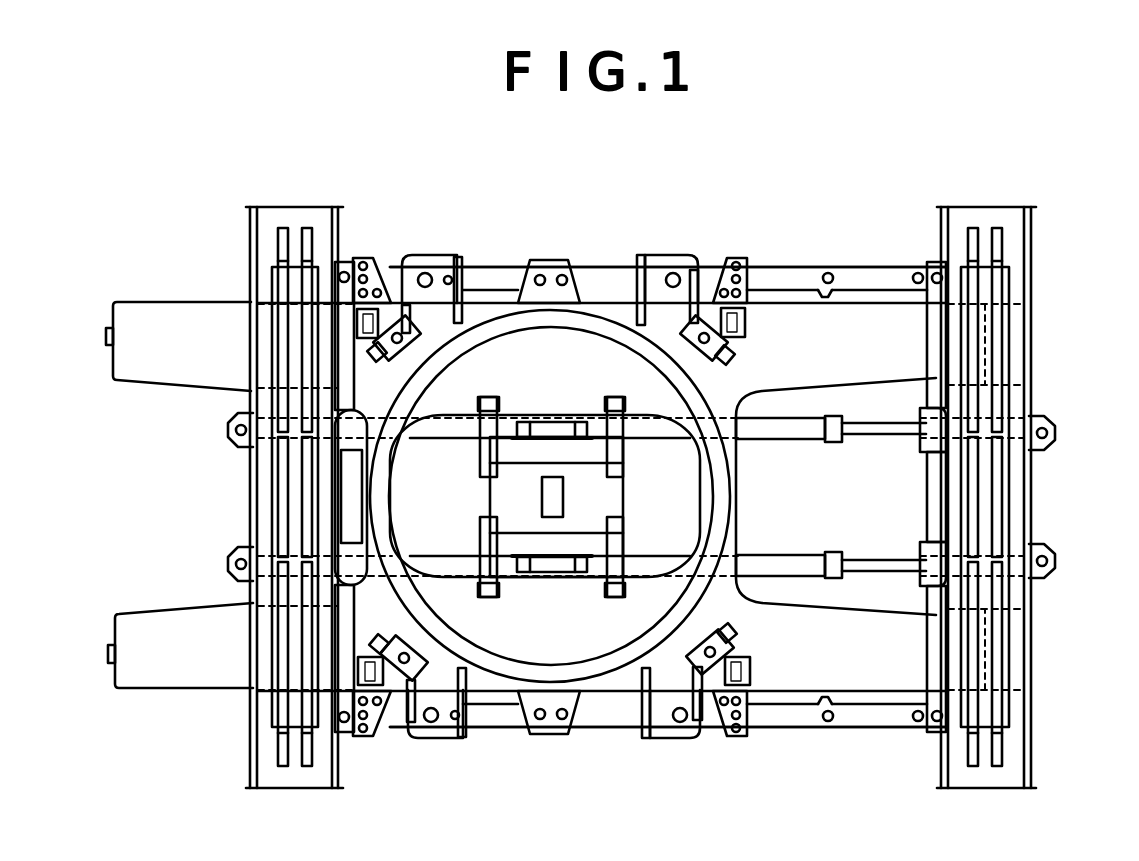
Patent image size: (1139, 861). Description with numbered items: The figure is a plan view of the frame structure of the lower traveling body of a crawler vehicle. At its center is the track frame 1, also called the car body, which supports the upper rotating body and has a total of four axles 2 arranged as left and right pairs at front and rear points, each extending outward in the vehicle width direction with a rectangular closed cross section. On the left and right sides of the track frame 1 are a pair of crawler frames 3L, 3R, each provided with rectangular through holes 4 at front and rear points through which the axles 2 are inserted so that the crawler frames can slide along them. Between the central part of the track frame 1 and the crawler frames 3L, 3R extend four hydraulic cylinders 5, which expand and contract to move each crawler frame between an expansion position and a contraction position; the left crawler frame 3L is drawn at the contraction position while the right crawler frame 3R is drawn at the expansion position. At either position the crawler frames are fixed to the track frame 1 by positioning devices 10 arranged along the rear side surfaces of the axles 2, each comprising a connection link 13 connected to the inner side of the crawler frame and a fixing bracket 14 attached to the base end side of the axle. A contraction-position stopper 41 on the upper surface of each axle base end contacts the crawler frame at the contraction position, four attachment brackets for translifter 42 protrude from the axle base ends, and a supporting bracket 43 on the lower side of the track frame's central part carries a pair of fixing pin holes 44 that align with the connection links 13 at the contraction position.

The track frame 1 is at (620, 302).
The axle 2 is at (166, 302).
The left crawler frame 3L is at (251, 478).
The right crawler frame 3R is at (1032, 470).
The through hole 4 is at (250, 312).
The hydraulic cylinder 5 is at (437, 432).
The positioning device 10 is at (472, 256).
The connection link 13 is at (497, 268).
The fixing bracket 14 is at (366, 258).
The contraction-position stopper 41 is at (368, 340).
The attachment bracket for translifter 42 is at (430, 255).
The supporting bracket 43 is at (578, 262).
The fixing pin hole 44 is at (562, 275).